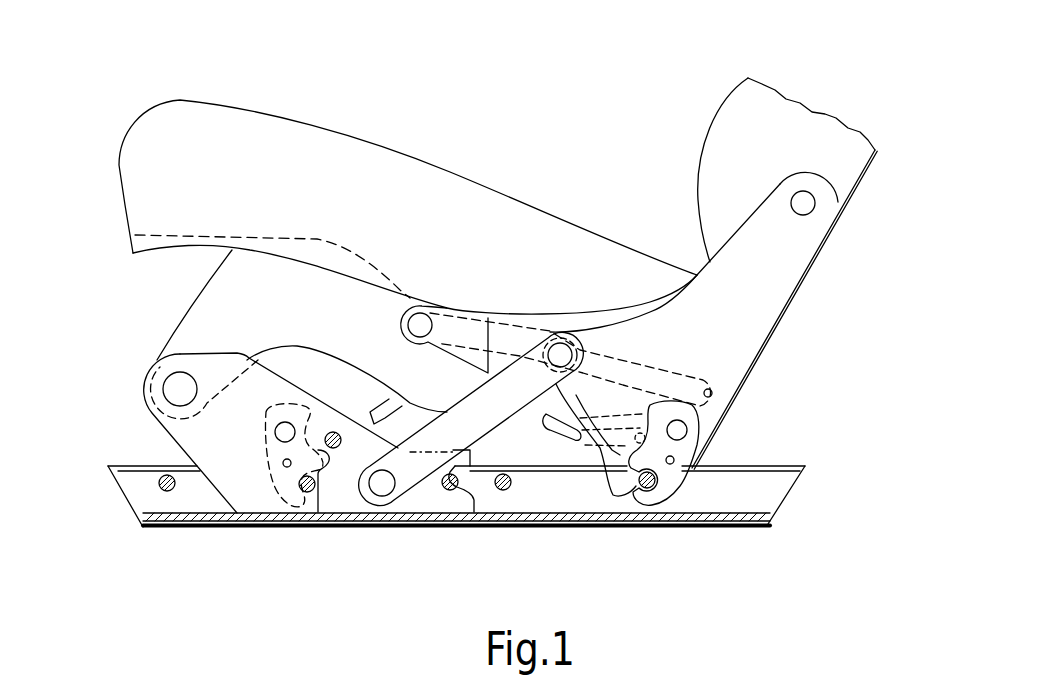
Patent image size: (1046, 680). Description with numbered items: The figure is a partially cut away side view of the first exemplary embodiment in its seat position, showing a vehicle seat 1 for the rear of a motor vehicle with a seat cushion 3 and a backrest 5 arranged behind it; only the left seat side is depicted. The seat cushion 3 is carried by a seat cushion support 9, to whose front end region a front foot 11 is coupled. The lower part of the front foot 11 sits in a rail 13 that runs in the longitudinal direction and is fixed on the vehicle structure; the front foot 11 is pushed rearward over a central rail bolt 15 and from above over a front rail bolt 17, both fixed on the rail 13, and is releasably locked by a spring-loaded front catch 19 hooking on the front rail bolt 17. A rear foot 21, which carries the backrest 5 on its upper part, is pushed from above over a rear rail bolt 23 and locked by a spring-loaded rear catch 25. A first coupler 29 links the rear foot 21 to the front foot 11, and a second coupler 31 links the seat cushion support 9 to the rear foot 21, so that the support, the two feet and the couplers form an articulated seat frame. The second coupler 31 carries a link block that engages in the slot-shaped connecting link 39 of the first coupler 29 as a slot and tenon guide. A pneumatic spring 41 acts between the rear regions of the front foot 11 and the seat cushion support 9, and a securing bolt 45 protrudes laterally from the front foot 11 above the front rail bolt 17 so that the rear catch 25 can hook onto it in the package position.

The vehicle seat 1 is at (592, 160).
The seat cushion 3 is at (295, 205).
The backrest 5 is at (795, 142).
The seat cushion support 9 is at (233, 312).
The front foot 11 is at (207, 437).
The rail 13 is at (143, 497).
The central rail bolt 15 is at (470, 490).
The front rail bolt 17 is at (307, 492).
The front catch 19 is at (260, 497).
The rear foot 21 is at (730, 357).
The rear rail bolt 23 is at (652, 490).
The rear catch 25 is at (677, 447).
The first coupler 29 is at (465, 418).
The second coupler 31 is at (650, 366).
The connecting link 39 is at (575, 432).
The pneumatic spring 41 is at (385, 418).
The securing bolt 45 is at (335, 450).